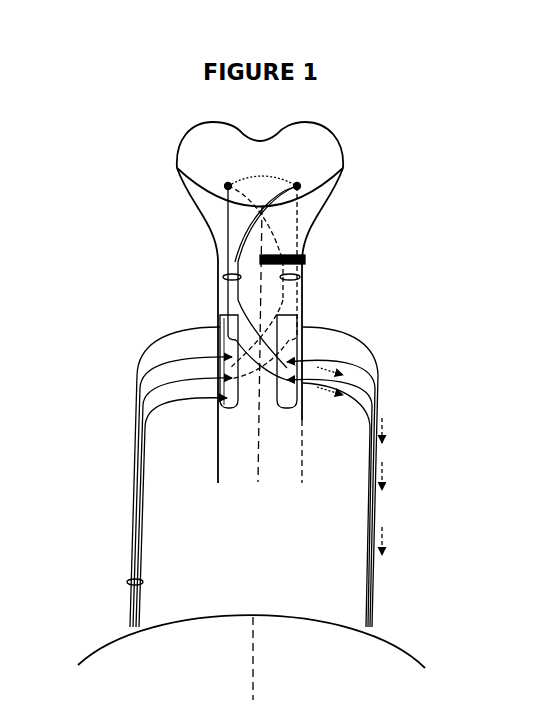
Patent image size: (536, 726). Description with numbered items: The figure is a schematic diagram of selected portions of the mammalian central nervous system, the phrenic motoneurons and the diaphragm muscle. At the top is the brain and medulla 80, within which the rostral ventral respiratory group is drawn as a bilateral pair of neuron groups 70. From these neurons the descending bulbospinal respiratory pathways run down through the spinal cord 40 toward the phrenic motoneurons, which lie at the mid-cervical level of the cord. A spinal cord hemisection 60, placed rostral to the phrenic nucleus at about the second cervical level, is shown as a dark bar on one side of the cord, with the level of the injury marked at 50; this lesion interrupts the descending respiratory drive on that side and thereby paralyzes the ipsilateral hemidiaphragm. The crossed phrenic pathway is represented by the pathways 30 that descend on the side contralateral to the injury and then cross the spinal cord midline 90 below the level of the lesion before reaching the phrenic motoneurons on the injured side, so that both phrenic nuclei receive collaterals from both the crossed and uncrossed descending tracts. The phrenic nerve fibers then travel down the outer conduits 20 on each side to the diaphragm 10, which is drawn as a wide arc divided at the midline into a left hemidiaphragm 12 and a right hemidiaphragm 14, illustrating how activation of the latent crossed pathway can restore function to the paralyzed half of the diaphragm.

The base 10 is at (282, 615).
The left base portion 12 is at (172, 669).
The right base portion 14 is at (312, 669).
The outer body wall 20 is at (142, 581).
The flow channels 30 is at (224, 396).
The neck housing 40 is at (226, 297).
The seals 50 is at (240, 272).
The valve plate 60 is at (307, 260).
The connection nodes 70 is at (260, 270).
The head portion 80 is at (248, 150).
The central axis 90 is at (260, 482).